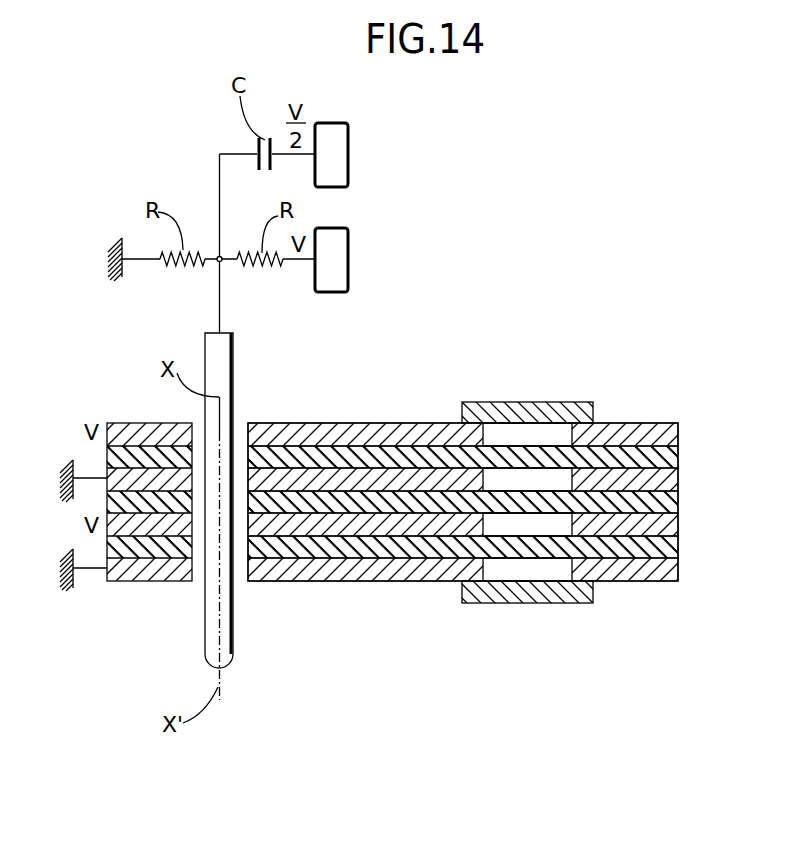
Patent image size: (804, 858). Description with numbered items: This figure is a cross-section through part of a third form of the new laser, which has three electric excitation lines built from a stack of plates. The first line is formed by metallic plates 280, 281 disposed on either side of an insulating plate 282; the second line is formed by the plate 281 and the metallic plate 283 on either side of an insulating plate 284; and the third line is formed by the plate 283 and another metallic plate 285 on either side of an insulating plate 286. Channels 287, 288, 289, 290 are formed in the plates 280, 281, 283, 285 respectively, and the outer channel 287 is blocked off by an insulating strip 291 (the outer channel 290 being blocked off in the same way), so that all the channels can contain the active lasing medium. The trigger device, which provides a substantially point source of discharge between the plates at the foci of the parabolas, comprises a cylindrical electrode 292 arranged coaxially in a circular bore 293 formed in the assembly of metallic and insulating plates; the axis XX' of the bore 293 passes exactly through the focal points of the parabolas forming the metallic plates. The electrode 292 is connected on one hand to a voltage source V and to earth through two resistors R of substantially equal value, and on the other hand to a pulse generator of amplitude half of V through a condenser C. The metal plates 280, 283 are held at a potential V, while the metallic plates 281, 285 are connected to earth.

The metallic plate 280 is at (663, 437).
The metallic plate 281 is at (662, 482).
The insulating plate 282 is at (663, 458).
The metallic plate 283 is at (663, 525).
The insulating plate 284 is at (658, 507).
The metallic plate 285 is at (662, 572).
The insulating plate 286 is at (655, 552).
The channel 287 is at (523, 433).
The channel 288 is at (543, 478).
The channel 289 is at (563, 522).
The channel 290 is at (520, 572).
The insulating strip 291 is at (502, 412).
The cylindrical electrode 292 is at (230, 362).
The circular bore 293 is at (240, 430).